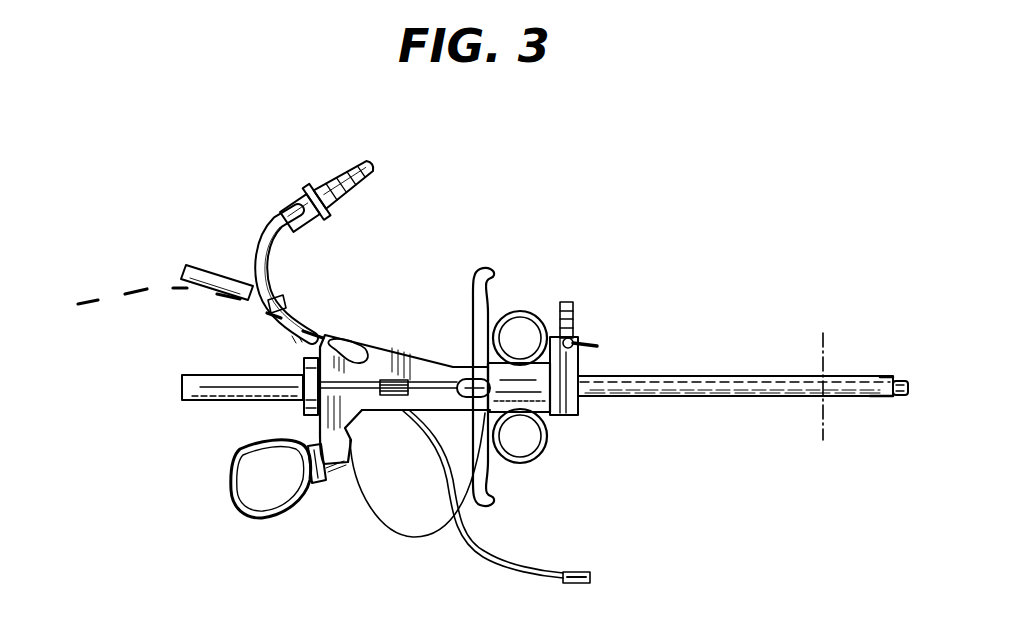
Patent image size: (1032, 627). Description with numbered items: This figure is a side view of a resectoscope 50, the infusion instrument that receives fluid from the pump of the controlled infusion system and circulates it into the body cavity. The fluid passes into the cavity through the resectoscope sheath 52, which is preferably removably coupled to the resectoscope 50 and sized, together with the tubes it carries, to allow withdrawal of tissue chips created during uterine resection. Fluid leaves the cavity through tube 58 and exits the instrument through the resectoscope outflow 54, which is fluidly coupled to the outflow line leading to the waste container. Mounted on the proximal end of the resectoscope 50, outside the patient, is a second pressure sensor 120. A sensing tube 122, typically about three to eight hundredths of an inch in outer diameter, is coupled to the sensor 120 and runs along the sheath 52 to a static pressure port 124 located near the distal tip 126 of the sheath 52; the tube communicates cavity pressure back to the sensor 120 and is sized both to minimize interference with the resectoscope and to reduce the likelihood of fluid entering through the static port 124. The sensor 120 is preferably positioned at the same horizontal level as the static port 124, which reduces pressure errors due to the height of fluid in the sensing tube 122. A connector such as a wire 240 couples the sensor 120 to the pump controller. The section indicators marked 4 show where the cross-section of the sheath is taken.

The surgical instrument 50 is at (583, 194).
The elongated shaft 52 is at (717, 388).
The barbed tube fitting 54 is at (367, 160).
The distal tip 58 is at (898, 397).
The angled tube 120 is at (193, 267).
The inner lumen 122 is at (667, 378).
The distal end of shaft 124 is at (890, 377).
The distal end lower surface 126 is at (887, 397).
The phantom guide element 240 is at (93, 302).
The section line 4- 4 is at (814, 341).